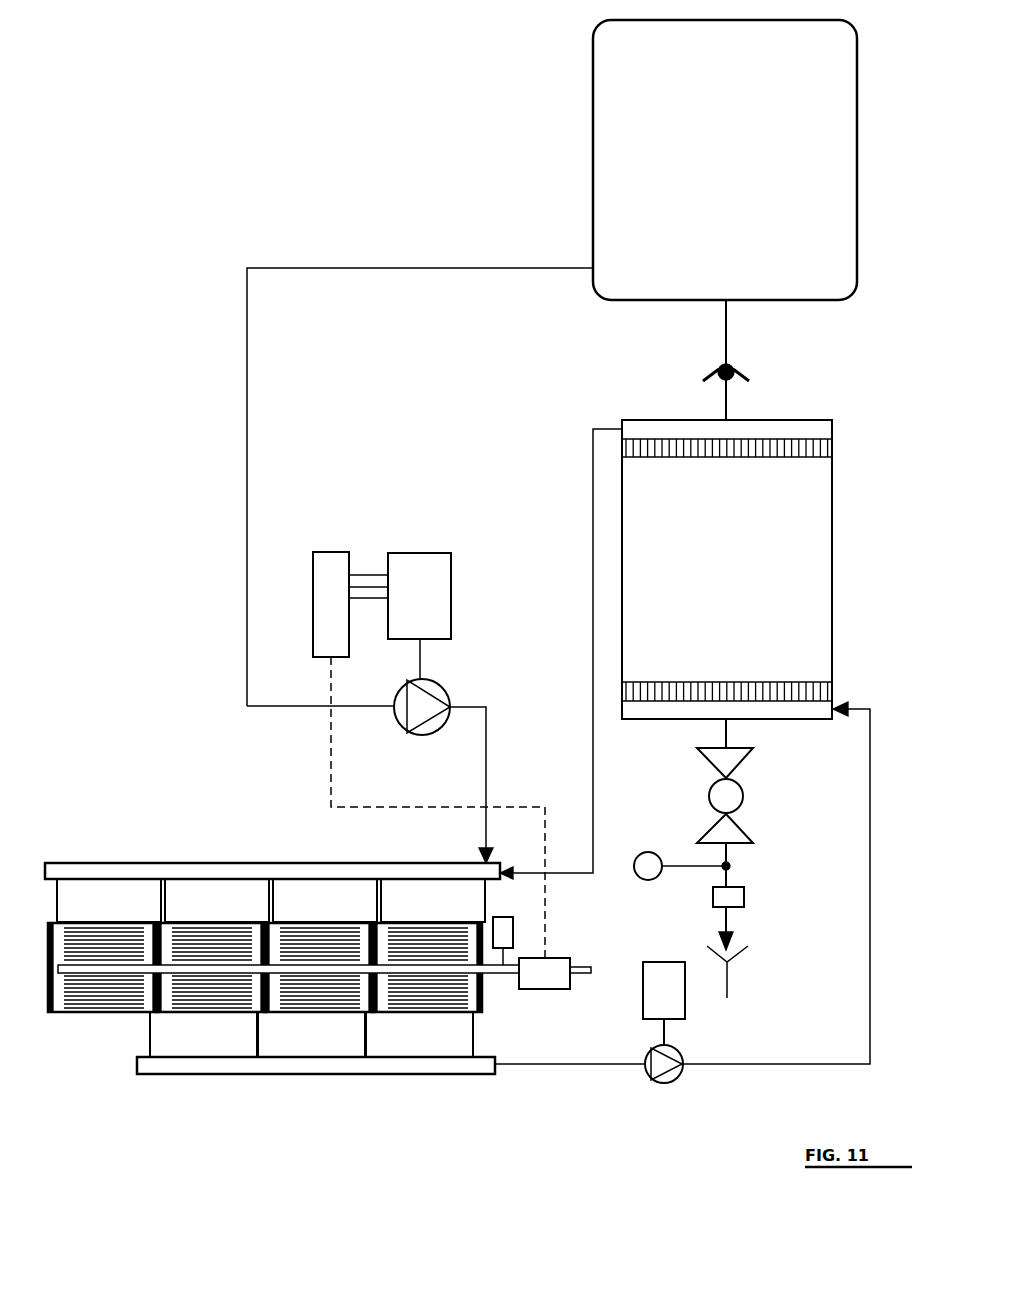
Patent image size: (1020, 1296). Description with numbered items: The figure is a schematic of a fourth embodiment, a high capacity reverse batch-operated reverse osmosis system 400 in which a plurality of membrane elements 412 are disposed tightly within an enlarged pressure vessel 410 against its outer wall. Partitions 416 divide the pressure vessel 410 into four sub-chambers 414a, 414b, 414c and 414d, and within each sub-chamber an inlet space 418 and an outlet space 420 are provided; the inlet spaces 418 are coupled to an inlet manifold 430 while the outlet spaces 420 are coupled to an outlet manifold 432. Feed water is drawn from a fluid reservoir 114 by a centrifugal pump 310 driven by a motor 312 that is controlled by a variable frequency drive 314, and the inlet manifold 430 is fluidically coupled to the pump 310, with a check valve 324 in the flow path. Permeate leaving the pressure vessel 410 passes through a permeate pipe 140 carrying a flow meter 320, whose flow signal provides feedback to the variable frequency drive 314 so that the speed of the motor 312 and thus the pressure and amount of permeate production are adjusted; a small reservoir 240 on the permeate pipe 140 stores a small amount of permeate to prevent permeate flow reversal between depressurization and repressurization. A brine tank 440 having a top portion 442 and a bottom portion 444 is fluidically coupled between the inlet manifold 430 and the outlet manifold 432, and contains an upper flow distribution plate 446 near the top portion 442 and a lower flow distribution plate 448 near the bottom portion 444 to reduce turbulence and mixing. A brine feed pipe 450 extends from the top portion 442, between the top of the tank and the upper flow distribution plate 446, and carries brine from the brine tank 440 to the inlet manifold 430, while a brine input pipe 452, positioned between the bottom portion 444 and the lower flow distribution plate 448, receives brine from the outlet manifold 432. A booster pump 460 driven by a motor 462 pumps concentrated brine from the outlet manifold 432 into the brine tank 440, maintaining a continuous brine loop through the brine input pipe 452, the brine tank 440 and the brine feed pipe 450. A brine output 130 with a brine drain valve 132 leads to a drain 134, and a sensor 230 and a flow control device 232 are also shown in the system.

The high capacity reverse batch-operated reverse osmosis system 400 is at (219, 145).
The fluid reservoir 114 is at (593, 197).
The check valve 324 is at (736, 372).
The brine tank 440 is at (769, 569).
The top portion 442 is at (769, 474).
The upper flow distribution plate 446 is at (812, 453).
The lower flow distribution plate 448 is at (812, 690).
The bottom portion 444 is at (768, 668).
The brine feed pipe 450 is at (593, 495).
The brine input pipe 452 is at (870, 820).
The brine output 130 is at (762, 787).
The brine drain valve 132 is at (740, 818).
The sensor 230 is at (650, 852).
The flow control device 232 is at (744, 900).
The drain 134 is at (733, 963).
The motor 462 is at (685, 1000).
The booster pump 460 is at (655, 1080).
The variable frequency drive 314 is at (313, 565).
The motor 312 is at (451, 565).
The centrifugal pump 310 is at (445, 690).
The pressure vessel 410 is at (282, 973).
The inlet manifold 430 is at (45, 863).
The outlet manifold 432 is at (160, 1074).
The membrane elements 412 is at (185, 945).
The sub-chamber 414a is at (160, 1015).
The sub-chamber 414b is at (160, 1018).
The sub-chamber 414c is at (268, 1018).
The sub-chamber 414d is at (376, 1018).
The inlet space 418 is at (66, 935).
The outlet space 420 is at (150, 940).
The partitions 416 is at (158, 1018).
The flow meter 320 is at (560, 990).
The permeate pipe 140 is at (575, 960).
The small reservoir 240 is at (500, 917).